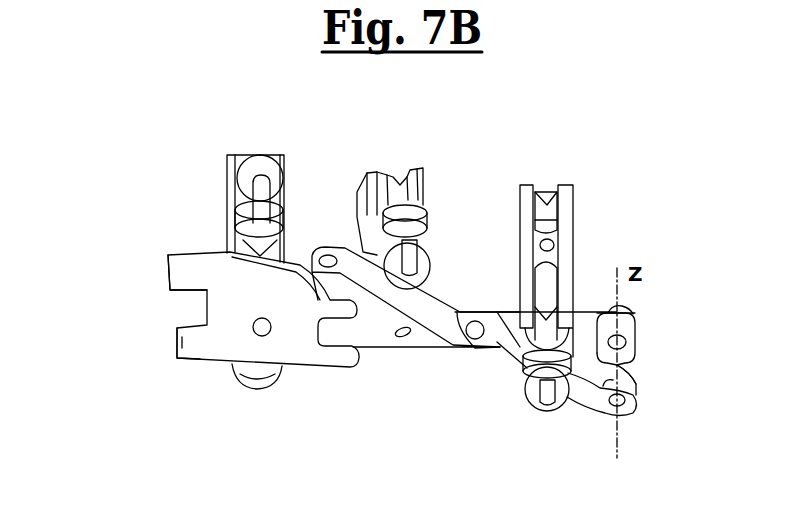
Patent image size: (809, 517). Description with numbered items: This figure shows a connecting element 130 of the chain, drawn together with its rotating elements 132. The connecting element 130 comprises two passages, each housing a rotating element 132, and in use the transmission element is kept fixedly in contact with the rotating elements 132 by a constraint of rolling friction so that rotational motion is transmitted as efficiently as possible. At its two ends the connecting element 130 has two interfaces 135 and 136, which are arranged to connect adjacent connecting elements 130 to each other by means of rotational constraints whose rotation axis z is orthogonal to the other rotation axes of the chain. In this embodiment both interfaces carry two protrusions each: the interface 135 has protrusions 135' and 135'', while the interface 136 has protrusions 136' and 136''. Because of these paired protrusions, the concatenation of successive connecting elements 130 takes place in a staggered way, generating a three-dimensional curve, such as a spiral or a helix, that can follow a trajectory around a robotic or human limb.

The connecting element 130 is at (503, 408).
The rotating element 132 is at (245, 193).
The interface 135 is at (632, 298).
The protrusion 135' is at (678, 295).
The protrusion 135'' is at (688, 408).
The interface 136 is at (194, 320).
The protrusion 136' is at (118, 271).
The protrusion 136'' is at (127, 356).